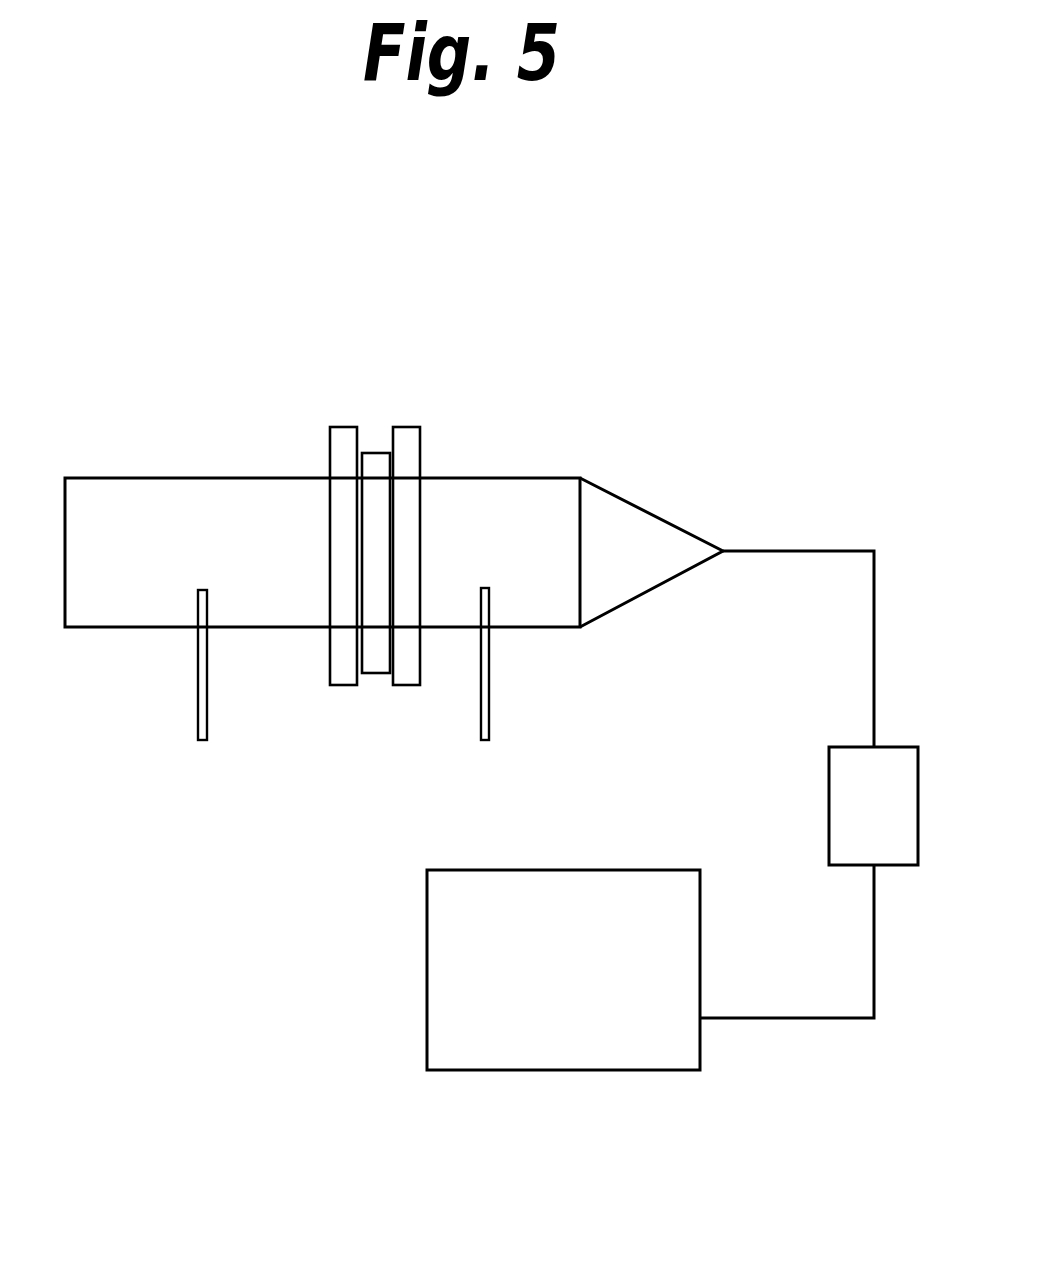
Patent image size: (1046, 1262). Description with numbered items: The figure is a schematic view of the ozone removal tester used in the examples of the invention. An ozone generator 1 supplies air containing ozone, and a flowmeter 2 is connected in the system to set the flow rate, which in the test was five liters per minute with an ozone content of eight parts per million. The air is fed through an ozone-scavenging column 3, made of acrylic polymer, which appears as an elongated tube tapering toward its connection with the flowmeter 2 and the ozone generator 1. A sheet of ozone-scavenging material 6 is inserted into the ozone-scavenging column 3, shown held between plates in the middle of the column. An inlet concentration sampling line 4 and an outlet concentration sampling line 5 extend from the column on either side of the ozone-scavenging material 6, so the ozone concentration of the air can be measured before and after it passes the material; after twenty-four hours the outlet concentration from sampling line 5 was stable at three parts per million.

The ozone generator 1 is at (563, 908).
The flowmeter 2 is at (903, 848).
The ozone-scavenging column 3 is at (530, 500).
The inlet concentration sampling line 4 is at (489, 680).
The outlet concentration sampling line 5 is at (207, 697).
The ozone-scavenging material 6 is at (378, 466).